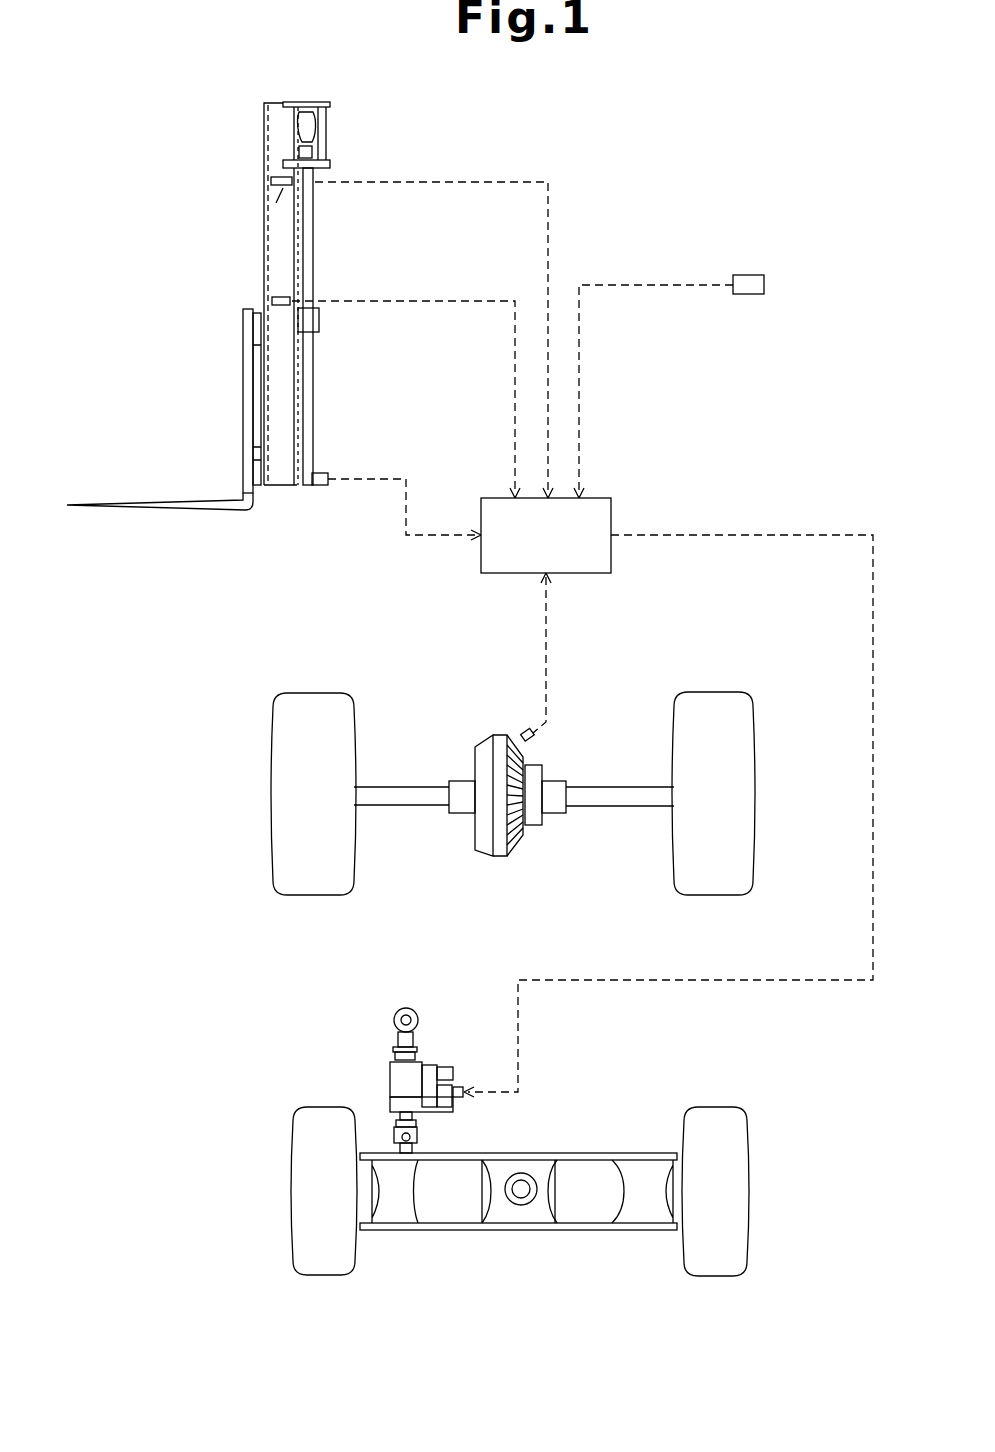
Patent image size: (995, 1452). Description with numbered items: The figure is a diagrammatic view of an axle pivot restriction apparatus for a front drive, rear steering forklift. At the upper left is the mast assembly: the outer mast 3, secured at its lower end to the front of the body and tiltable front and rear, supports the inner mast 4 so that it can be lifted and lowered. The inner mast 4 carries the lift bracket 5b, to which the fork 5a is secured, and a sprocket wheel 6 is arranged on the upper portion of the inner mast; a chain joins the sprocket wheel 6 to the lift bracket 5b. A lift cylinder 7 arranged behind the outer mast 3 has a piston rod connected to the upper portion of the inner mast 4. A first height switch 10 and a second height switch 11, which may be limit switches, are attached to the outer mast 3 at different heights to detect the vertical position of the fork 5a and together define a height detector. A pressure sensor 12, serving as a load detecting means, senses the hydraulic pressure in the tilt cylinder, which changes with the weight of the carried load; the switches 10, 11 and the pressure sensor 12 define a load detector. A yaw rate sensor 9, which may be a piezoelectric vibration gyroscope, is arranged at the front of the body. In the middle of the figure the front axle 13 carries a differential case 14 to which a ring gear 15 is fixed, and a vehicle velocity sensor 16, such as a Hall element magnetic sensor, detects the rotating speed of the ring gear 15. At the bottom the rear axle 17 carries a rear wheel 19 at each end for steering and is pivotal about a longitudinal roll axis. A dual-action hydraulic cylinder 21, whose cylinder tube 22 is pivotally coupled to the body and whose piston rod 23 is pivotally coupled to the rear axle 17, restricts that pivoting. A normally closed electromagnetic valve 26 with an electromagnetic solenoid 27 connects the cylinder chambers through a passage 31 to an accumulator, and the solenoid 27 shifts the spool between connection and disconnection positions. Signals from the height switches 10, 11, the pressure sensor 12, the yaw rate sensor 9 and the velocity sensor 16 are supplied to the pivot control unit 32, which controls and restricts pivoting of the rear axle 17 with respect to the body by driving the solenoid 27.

The outer mast 3 is at (264, 118).
The inner mast 4 is at (264, 170).
The fork 5a is at (160, 500).
The lift bracket 5b is at (243, 346).
The sprocket wheel 6 is at (314, 92).
The lift cylinder 7 is at (314, 240).
The yaw rate sensor 9 is at (765, 285).
The first height switch 10 is at (272, 298).
The second height switch 11 is at (276, 203).
The pressure sensor 12 is at (318, 473).
The front axle 13 is at (513, 764).
The differential case 14 is at (542, 772).
The ring gear 15 is at (517, 847).
The vehicle velocity sensor 16 is at (523, 733).
The rear axle 17 is at (520, 1161).
The rear wheel 19 is at (293, 1219).
The hydraulic cylinder 21 is at (390, 1067).
The cylinder tube 22 is at (410, 1068).
The piston rod 23 is at (413, 1117).
The electromagnetic valve 26 is at (452, 1107).
The electromagnetic solenoid 27 is at (463, 1086).
The passage 31 is at (443, 1067).
The pivot control unit 32 is at (612, 510).